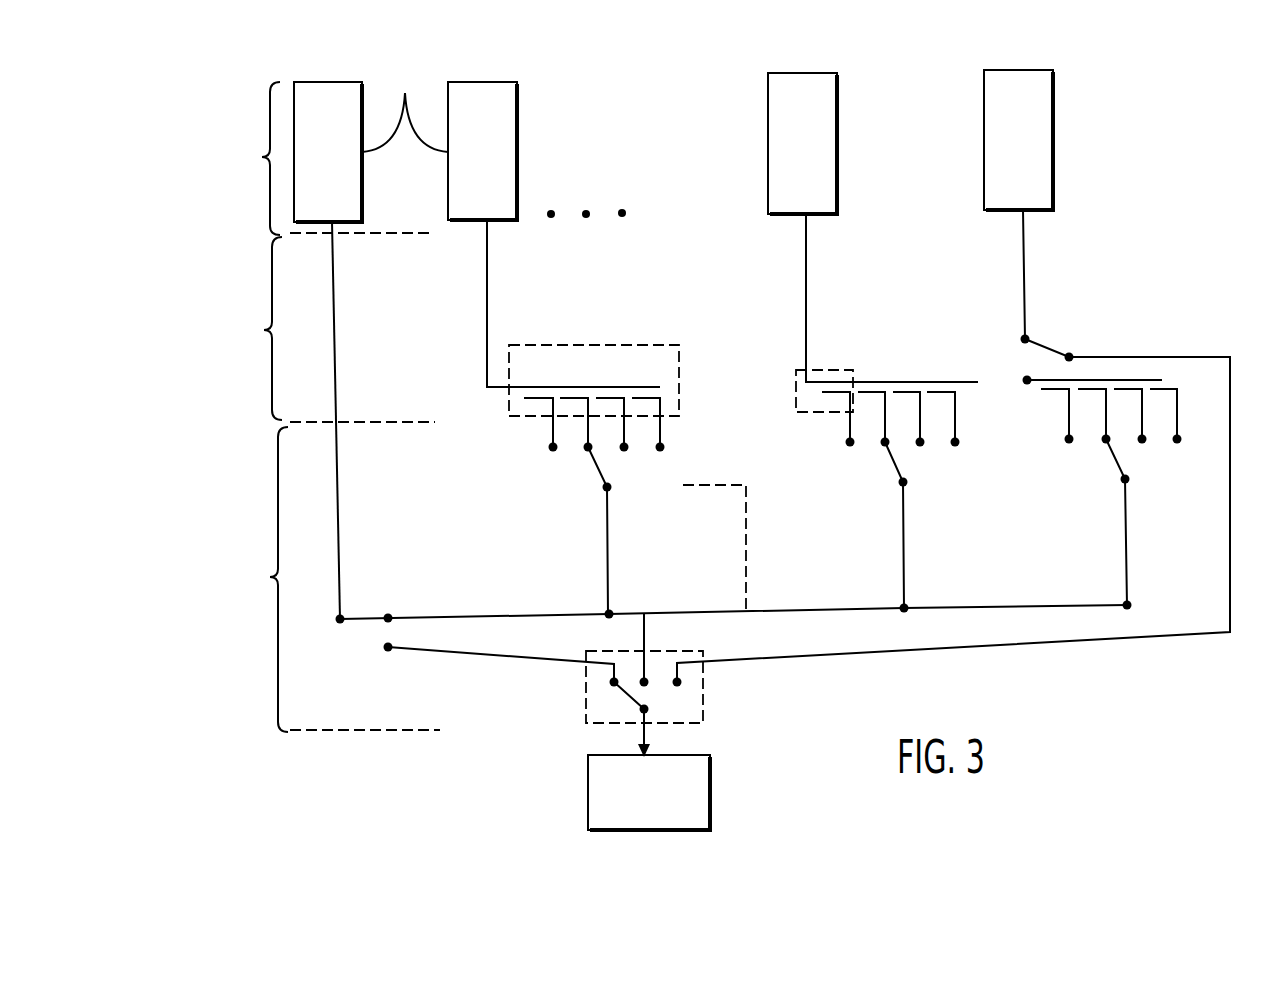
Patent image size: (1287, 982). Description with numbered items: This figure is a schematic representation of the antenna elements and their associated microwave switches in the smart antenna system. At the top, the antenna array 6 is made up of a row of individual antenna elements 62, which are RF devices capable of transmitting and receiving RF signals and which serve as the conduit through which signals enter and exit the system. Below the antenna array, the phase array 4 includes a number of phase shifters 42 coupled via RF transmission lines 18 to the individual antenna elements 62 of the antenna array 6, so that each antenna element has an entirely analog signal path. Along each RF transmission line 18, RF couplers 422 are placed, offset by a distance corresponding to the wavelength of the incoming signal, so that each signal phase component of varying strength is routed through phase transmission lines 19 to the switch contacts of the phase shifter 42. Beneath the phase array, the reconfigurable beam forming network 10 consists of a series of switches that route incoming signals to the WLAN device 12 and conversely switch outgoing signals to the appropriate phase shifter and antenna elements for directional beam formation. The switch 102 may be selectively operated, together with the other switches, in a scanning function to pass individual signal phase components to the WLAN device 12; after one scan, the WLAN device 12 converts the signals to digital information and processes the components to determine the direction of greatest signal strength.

The antenna array 6 is at (262, 157).
The antenna element 62 is at (405, 93).
The phase array 4 is at (264, 331).
The RF transmission line 18 is at (338, 327).
The phase shifter 42 is at (630, 343).
The phase transmission line 19 is at (660, 430).
The RF coupler 422 is at (845, 368).
The reconfigurable beam forming network 10 is at (270, 577).
The switch 102 is at (703, 703).
The WLAN device 12 is at (710, 793).